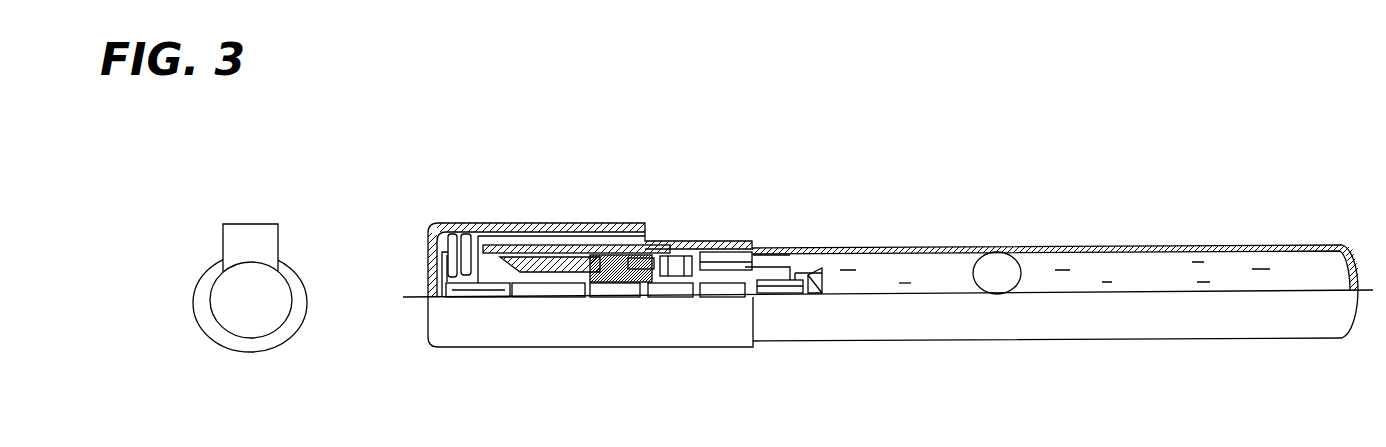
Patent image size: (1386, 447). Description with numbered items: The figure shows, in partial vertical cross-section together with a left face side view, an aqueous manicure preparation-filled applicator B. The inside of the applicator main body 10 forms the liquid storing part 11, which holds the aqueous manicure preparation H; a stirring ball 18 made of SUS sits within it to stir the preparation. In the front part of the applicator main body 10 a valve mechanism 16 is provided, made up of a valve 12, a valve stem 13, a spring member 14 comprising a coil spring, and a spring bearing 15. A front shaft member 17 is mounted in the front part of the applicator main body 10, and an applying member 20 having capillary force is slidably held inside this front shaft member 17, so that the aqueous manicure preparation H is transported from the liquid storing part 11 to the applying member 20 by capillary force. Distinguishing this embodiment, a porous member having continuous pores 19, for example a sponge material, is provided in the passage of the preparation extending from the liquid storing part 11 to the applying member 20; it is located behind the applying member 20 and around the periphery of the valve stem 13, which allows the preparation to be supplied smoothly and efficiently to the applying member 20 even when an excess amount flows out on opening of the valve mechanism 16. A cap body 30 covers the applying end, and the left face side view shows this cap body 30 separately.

The applicator main body 10 is at (1083, 245).
The liquid storing part 11 is at (1138, 265).
The valve 12 is at (675, 268).
The valve stem 13 is at (715, 265).
The spring member 14 is at (775, 268).
The spring bearing 15 is at (800, 270).
The valve mechanism 16 is at (830, 265).
The front shaft member 17 is at (622, 280).
The stirring ball 18 is at (997, 262).
The porous member having continuous pores 19 is at (640, 265).
The applying member 20 is at (567, 290).
The cap body 30 is at (230, 223).
The aqueous manicure preparation-filled applicator B is at (1055, 202).
The aqueous manicure preparation H is at (905, 283).